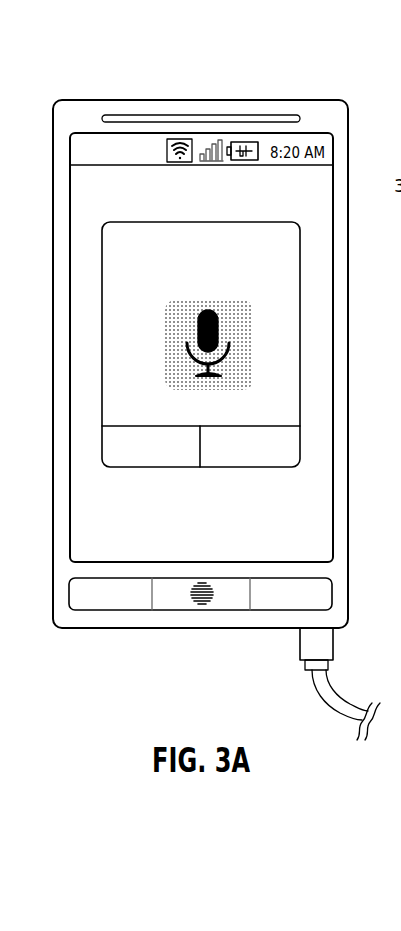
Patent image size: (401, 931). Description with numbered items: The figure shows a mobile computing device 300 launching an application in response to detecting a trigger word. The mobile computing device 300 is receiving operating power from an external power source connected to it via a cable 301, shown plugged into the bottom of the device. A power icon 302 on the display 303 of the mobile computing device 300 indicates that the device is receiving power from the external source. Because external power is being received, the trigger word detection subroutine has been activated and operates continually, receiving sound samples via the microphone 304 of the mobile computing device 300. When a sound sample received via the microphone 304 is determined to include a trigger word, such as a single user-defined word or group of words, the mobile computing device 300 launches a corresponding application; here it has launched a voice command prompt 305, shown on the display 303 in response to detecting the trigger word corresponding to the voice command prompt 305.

The mobile computing device 300 is at (341, 96).
The cable 301 is at (300, 642).
The power icon 302 is at (243, 142).
The display 303 is at (85, 135).
The microphone 304 is at (202, 612).
The voice command prompt 305 is at (90, 234).